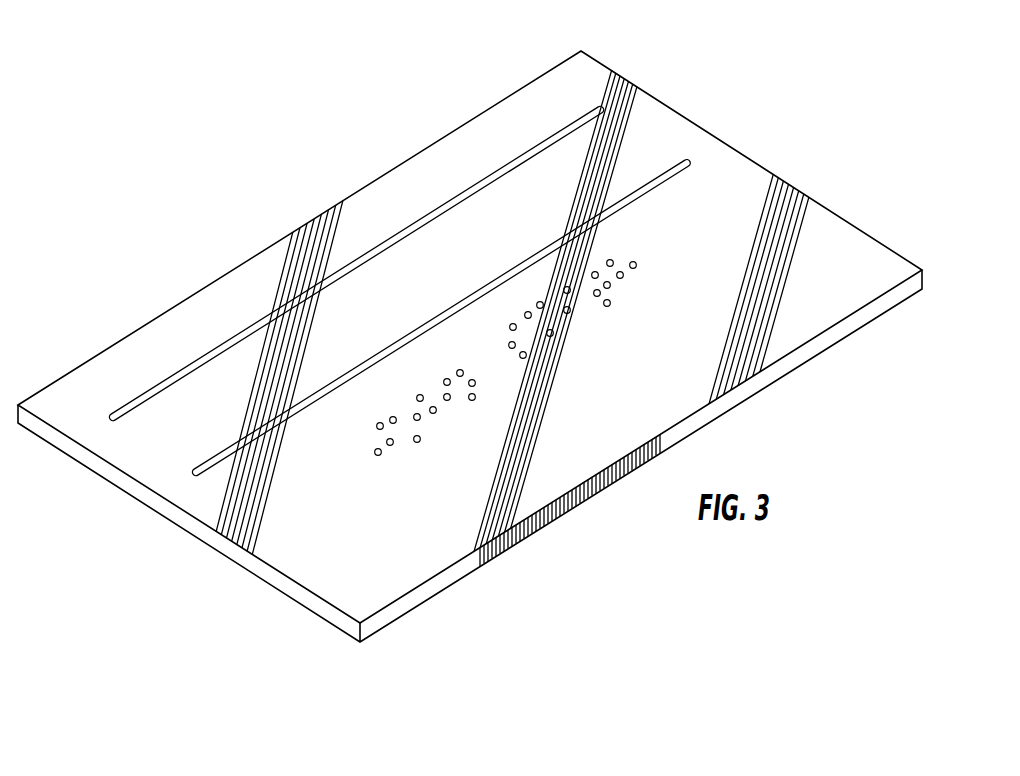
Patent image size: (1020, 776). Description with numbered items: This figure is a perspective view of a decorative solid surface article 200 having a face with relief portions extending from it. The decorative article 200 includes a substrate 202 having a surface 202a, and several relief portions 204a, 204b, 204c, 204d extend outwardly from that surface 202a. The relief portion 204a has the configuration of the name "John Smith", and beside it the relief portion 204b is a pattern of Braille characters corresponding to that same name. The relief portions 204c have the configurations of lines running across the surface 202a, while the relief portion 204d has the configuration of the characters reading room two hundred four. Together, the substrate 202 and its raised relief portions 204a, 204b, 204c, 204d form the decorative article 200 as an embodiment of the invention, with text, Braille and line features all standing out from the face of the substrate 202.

The decorative solid surface article 200 is at (697, 94).
The substrate 202 is at (865, 230).
The surface 202a is at (852, 300).
The relief portion 204a is at (268, 377).
The relief portion 204b is at (357, 446).
The relief portions 204c is at (592, 227).
The relief portion 204d is at (652, 363).